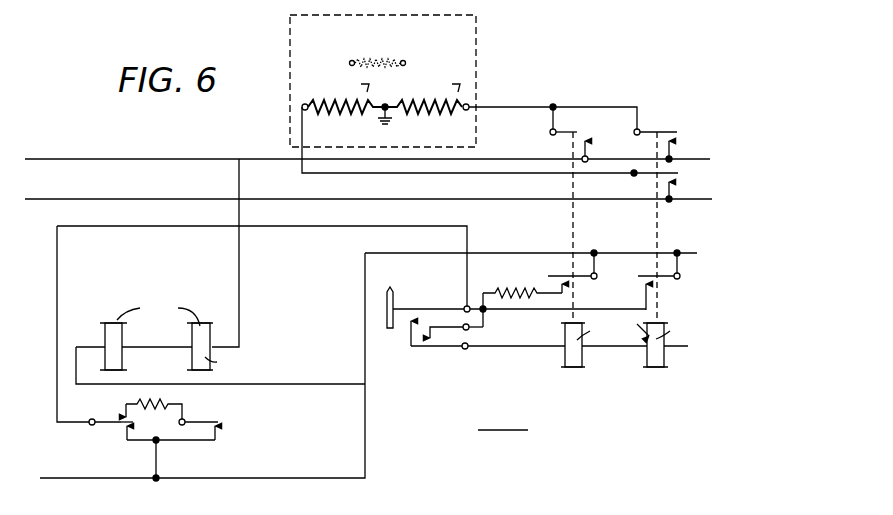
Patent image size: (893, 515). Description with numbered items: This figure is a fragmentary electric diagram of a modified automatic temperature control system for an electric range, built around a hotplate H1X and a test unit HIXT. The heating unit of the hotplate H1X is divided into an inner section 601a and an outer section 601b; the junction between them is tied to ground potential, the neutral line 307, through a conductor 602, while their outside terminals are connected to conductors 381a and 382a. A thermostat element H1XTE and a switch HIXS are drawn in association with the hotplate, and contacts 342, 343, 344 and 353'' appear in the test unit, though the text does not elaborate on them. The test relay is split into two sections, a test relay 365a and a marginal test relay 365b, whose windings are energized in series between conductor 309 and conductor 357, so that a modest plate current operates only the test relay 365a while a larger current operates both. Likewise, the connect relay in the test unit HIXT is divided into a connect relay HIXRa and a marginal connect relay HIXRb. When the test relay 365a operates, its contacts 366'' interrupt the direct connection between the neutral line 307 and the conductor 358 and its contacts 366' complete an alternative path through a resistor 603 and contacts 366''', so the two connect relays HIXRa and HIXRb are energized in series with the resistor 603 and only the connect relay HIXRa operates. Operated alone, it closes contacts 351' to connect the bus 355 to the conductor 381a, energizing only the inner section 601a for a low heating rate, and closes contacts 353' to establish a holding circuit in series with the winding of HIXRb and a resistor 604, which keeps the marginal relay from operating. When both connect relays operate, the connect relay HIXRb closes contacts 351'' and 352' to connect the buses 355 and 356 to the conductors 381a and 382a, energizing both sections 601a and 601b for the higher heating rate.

The hotplate H1X is at (476, 27).
The hotplate thermostat element H1XTE is at (373, 55).
The inner section of heating unit 601a is at (452, 115).
The outer section of heating unit 601b is at (358, 114).
The conductor 602 is at (383, 115).
The conductor 381a is at (526, 103).
The conductor 382a is at (545, 173).
The bus 355 is at (170, 154).
The bus 356 is at (170, 195).
The conductor 358 is at (170, 221).
The neutral line 307 is at (412, 249).
The conductor 309 is at (240, 268).
The test relay 365a is at (112, 342).
The marginal test relay 365b is at (205, 337).
The conductor 357 is at (262, 389).
The resistor 603 is at (168, 397).
The contacts 366' is at (99, 408).
The contacts 366'' is at (136, 353).
The contacts 366''' is at (228, 435).
The contacts 351' is at (593, 213).
The contacts 351'' is at (680, 224).
The contacts 352' is at (695, 189).
The contacts 353' is at (562, 272).
The switch contact 353'' is at (679, 280).
The resistor 604 is at (521, 288).
The switch contact 344 is at (454, 307).
The switch contact 343 is at (464, 325).
The switch contact 342 is at (456, 352).
The hotplate switch HIXS is at (388, 333).
The connect relay HIXRa is at (572, 356).
The marginal connect relay HIXRb is at (655, 357).
The test unit HIXT is at (503, 420).